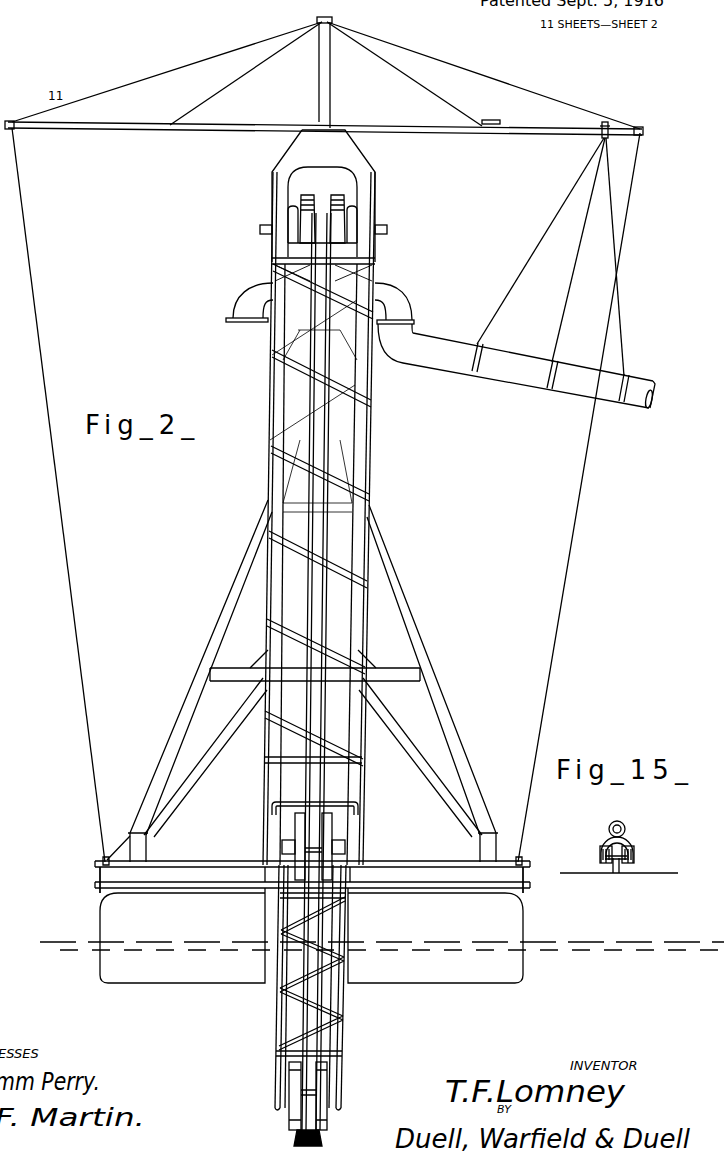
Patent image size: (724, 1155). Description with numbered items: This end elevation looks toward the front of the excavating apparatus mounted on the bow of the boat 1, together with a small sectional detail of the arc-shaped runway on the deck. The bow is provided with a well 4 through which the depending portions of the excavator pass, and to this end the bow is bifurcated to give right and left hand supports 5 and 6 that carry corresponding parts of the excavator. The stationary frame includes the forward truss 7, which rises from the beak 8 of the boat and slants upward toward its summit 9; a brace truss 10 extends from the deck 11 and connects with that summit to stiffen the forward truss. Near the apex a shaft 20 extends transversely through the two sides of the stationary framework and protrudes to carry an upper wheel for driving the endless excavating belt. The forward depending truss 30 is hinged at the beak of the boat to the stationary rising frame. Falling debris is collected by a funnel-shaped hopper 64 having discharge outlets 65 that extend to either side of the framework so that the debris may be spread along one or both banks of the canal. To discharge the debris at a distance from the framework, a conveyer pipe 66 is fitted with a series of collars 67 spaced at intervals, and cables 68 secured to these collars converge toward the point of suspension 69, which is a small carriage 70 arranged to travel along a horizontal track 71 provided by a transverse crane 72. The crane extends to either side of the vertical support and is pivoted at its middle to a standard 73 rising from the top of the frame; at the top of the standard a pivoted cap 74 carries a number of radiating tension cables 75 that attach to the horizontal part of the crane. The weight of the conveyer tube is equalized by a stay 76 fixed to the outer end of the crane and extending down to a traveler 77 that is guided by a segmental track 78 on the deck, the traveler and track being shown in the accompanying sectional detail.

In FIG. 2, the boat 1 is at (524, 903).
In FIG. 2, the well 4 is at (345, 987).
In FIG. 2, the right hand support 5 is at (204, 975).
In FIG. 2, the left hand support 6 is at (486, 975).
In FIG. 2, the forward truss 7 is at (374, 436).
In FIG. 2, the beak 8 is at (367, 866).
In FIG. 2, the summit 9 is at (323, 205).
In FIG. 2, the brace truss 10 is at (390, 592).
In FIG. 2, the deck 11 is at (441, 870).
In FIG. 2, the shaft 20 is at (380, 225).
In FIG. 2, the forward depending truss 30 is at (343, 1040).
In FIG. 2, the funnel-shaped hopper 64 is at (335, 252).
In FIG. 2, the discharge outlets 65 is at (390, 302).
In FIG. 2, the conveyer pipe 66 is at (539, 380).
In FIG. 2, the collars 67 is at (476, 354).
In FIG. 2, the cables 68 is at (550, 257).
In FIG. 2, the point of suspension 69 is at (607, 138).
In FIG. 2, the carriage 70 is at (605, 124).
In FIG. 2, the horizontal track 71 is at (500, 115).
In FIG. 2, the transverse crane 72 is at (323, 124).
In FIG. 2, the standard 73 is at (313, 75).
In FIG. 2, the pivoted cap 74 is at (322, 11).
In FIG. 2, the tension cables 75 is at (326, 75).
In FIG. 2, the stay 76 is at (326, 495).
In FIG. 2, the traveler 77 is at (102, 861).
In FIG. 15, the traveler 77 is at (606, 848).
In FIG. 15, the segmental track 78 is at (630, 872).